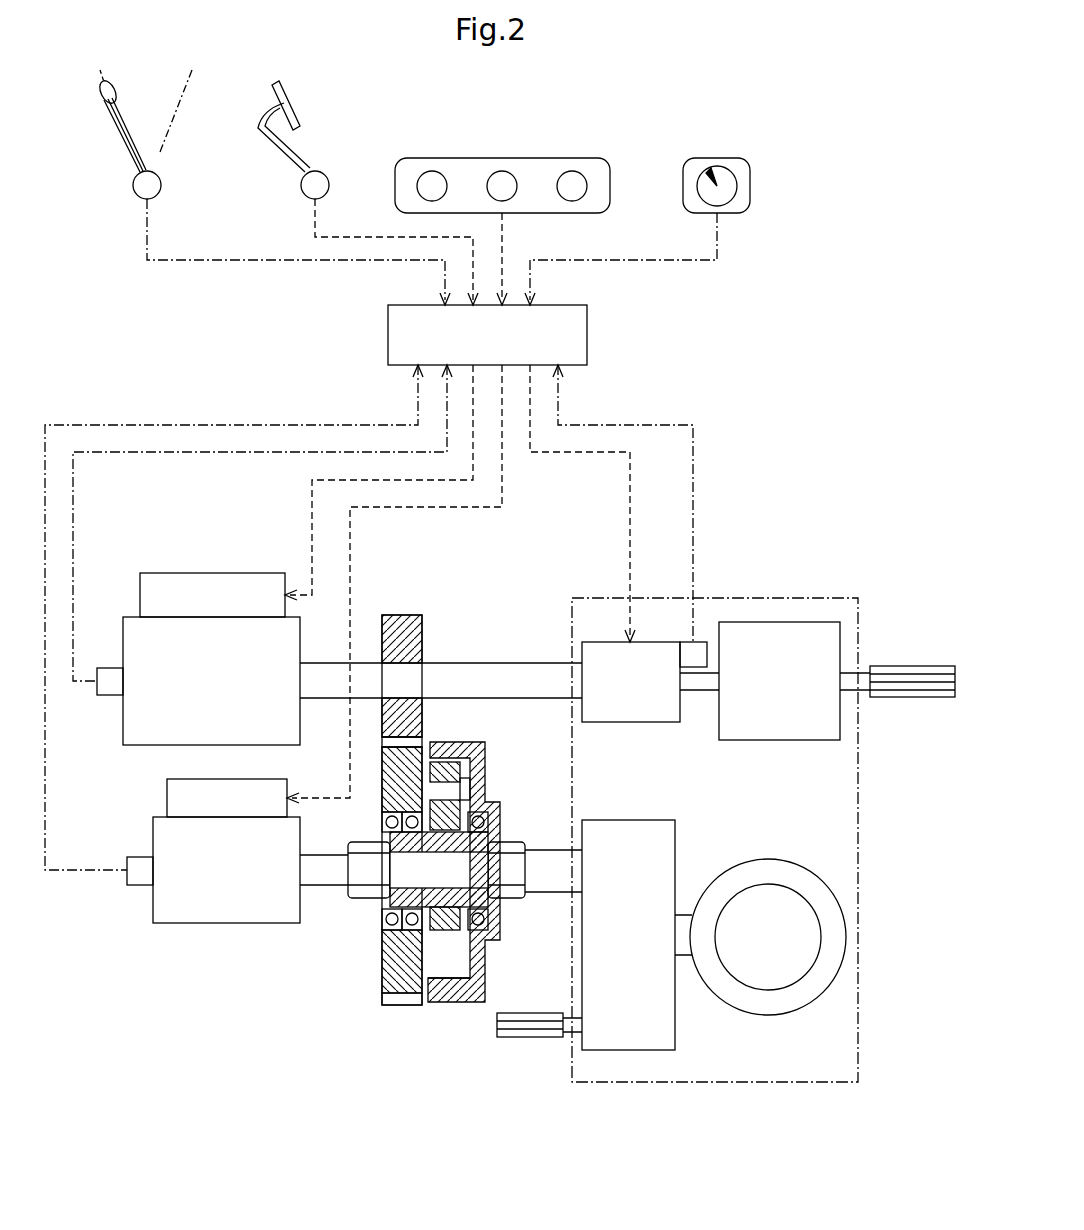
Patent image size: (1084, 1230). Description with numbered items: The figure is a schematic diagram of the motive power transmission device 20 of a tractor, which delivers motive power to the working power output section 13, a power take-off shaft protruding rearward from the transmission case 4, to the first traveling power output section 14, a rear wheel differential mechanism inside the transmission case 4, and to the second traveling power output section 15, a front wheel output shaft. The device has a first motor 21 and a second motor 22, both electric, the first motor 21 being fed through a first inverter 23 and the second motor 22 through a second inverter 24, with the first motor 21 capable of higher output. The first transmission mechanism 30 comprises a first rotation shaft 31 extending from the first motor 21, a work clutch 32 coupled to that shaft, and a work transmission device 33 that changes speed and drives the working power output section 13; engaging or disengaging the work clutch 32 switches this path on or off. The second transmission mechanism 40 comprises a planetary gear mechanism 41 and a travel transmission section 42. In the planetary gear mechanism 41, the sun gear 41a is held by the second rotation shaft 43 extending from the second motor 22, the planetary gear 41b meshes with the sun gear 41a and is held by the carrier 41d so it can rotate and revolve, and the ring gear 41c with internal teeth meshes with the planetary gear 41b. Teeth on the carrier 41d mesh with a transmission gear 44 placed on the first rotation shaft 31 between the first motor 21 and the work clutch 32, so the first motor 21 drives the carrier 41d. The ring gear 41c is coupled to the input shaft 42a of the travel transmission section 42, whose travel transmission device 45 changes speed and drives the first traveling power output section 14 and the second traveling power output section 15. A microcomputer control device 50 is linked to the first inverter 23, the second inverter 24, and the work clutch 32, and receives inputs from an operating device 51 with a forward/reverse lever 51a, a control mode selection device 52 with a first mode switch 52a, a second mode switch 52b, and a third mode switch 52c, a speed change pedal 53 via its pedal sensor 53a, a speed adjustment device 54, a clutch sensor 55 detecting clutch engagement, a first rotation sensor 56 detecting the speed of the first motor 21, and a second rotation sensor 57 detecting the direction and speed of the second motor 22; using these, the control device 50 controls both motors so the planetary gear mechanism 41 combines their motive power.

The transmission case 4 is at (860, 805).
The working power output section 13 is at (912, 666).
The first traveling power output section 14 is at (835, 940).
The second traveling power output section 15 is at (522, 1040).
The motive power transmission device 20 is at (170, 528).
The first motor 21 is at (125, 720).
The second motor 22 is at (240, 930).
The first inverter 23 is at (222, 573).
The second inverter 24 is at (167, 795).
The first transmission mechanism 30 is at (510, 633).
The first rotation shaft 31 is at (330, 663).
The work clutch 32 is at (620, 730).
The work transmission device 33 is at (797, 622).
The second transmission mechanism 40 is at (272, 1053).
The planetary gear mechanism 41 is at (408, 1015).
The sun gear 41a is at (450, 912).
The planetary gear 41b is at (462, 768).
The ring gear 41c is at (457, 1003).
The carrier 41d is at (405, 770).
The travel transmission section 42 is at (551, 835).
The input shaft 42a is at (545, 885).
The second rotation shaft 43 is at (330, 878).
The transmission gear 44 is at (421, 640).
The travel transmission device 45 is at (632, 1050).
The control device 50 is at (388, 330).
The operating device 51 is at (97, 184).
The forward/reverse lever 51a is at (124, 146).
The control mode selection device 52 is at (592, 158).
The first mode switch 52a is at (435, 180).
The second mode switch 52b is at (505, 180).
The third mode switch 52c is at (575, 180).
The speed change pedal 53 is at (290, 103).
The pedal sensor 53a is at (307, 192).
The speed adjustment device 54 is at (722, 158).
The clutch sensor 55 is at (703, 642).
The first rotation sensor 56 is at (102, 668).
The second rotation sensor 57 is at (138, 885).